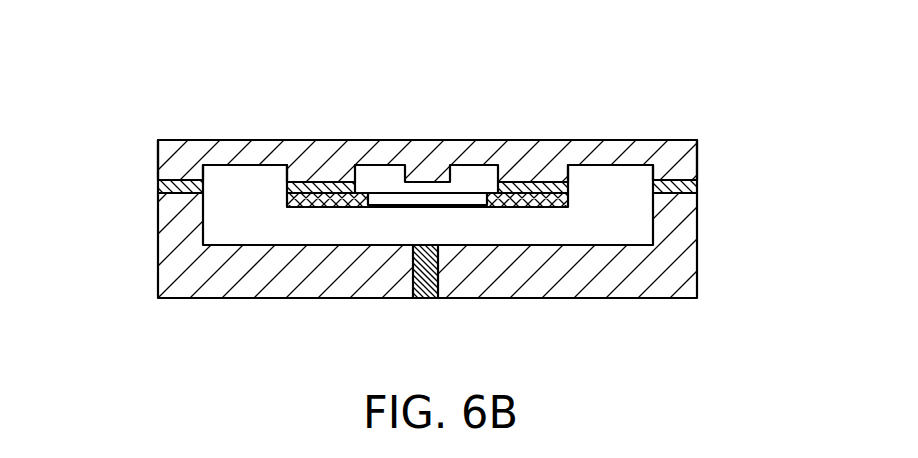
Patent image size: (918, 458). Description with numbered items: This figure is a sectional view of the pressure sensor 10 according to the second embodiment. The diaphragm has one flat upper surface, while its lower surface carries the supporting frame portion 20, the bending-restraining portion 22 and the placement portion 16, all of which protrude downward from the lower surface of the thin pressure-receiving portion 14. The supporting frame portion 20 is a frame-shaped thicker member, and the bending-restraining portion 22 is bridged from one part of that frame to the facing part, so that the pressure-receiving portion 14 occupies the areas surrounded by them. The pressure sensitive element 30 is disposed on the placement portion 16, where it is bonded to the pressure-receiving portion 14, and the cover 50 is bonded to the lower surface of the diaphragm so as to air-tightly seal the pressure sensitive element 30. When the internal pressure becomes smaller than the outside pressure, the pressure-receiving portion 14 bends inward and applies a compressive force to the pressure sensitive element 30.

The pressure sensor 10 is at (672, 88).
The pressure-receiving portion 14 is at (240, 140).
The placement portion 16 is at (289, 183).
The supporting frame portion 20 is at (158, 172).
The bending-restraining portion 22 is at (402, 172).
The pressure sensitive element 30 is at (398, 207).
The cover 50 is at (649, 299).